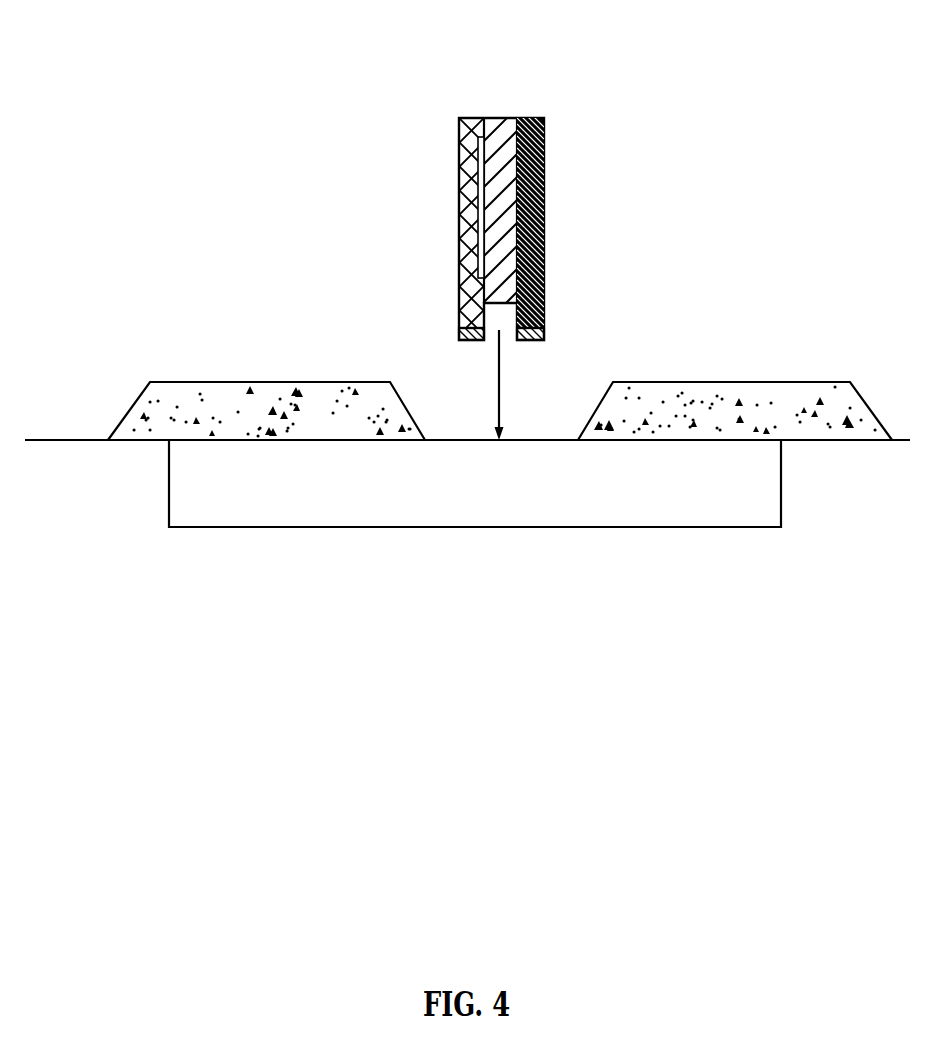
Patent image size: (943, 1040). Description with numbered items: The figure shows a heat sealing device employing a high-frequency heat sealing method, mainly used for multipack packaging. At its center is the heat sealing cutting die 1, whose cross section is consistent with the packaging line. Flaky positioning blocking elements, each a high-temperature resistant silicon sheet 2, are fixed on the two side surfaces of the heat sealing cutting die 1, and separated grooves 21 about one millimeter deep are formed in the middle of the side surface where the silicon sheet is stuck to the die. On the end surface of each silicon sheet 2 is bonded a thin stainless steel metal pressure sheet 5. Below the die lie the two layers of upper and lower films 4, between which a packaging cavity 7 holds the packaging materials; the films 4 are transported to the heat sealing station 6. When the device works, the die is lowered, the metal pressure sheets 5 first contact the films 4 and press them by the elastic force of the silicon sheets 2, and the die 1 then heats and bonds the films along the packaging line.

The heat sealing cutting die 1 is at (543, 118).
The high-temperature resistant silicon sheet 2 is at (459, 151).
The grooves 21 is at (474, 125).
The films 4 is at (80, 440).
The metal pressure sheet 5 is at (543, 313).
The heat sealing station 6 is at (270, 498).
The packaging cavity 7 is at (243, 398).